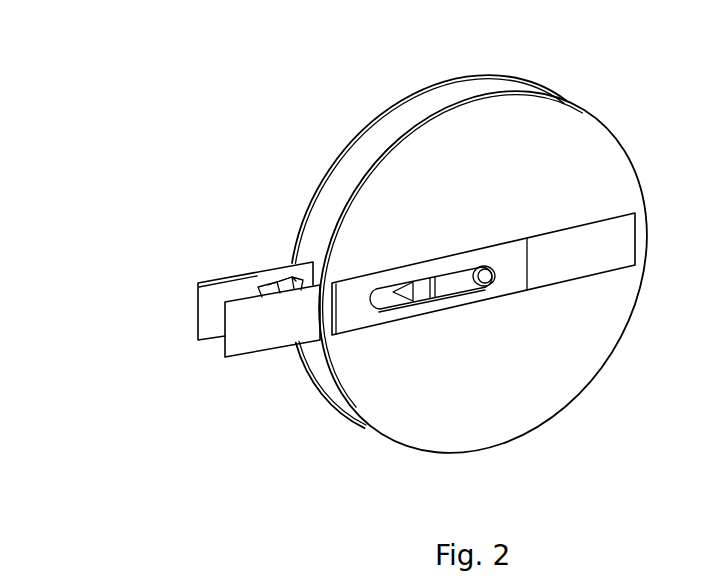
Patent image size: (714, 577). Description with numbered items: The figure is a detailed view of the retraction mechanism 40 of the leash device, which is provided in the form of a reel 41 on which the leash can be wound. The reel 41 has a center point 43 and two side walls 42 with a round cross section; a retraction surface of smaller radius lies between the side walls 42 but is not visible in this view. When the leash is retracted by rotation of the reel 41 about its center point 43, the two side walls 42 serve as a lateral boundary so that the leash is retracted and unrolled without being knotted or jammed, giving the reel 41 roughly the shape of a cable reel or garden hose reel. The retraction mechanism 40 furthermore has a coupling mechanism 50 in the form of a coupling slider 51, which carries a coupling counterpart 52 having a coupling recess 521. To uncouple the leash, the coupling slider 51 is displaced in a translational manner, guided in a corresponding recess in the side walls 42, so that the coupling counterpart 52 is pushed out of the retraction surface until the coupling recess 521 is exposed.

The retraction mechanism 40 is at (296, 98).
The reel 41 is at (483, 273).
The side walls 42 is at (472, 218).
The center point 43 is at (586, 357).
The coupling mechanism 50 is at (208, 266).
The coupling slider 51 is at (431, 345).
The coupling counterpart 52 is at (228, 227).
The coupling recess 521 is at (257, 206).